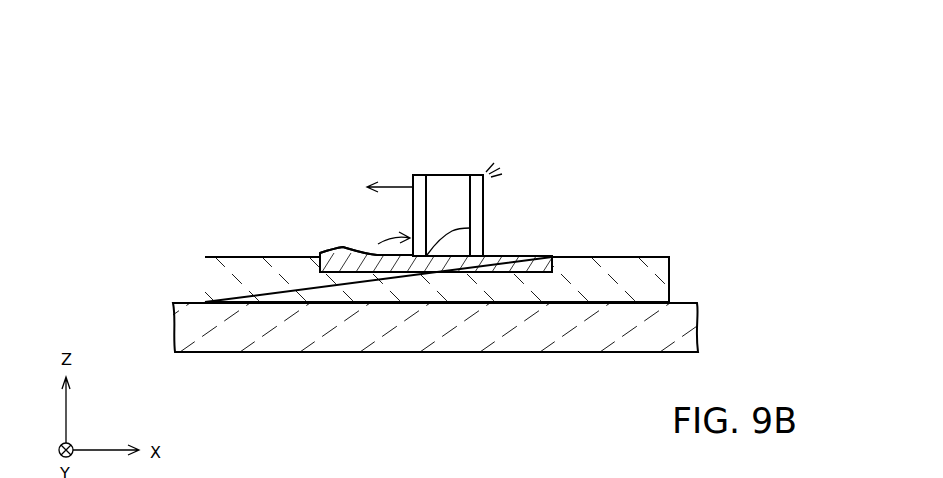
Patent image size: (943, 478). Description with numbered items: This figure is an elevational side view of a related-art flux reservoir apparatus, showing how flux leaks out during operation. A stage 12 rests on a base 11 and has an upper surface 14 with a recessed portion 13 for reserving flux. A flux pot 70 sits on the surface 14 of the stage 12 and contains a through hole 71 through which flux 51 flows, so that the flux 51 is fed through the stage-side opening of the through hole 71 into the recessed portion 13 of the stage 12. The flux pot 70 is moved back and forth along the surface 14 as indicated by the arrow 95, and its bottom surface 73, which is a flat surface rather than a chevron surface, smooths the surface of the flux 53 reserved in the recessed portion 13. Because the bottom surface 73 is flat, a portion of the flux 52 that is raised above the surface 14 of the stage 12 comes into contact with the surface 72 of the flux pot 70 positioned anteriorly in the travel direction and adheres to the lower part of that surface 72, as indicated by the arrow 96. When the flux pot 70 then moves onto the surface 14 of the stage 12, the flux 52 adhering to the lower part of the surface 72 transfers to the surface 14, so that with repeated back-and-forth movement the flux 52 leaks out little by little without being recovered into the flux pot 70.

The base 11 is at (698, 320).
The stage 12 is at (669, 270).
The recessed portion 13 is at (583, 256).
The surface of the stage 14 is at (638, 257).
The flux 51 is at (462, 227).
The flux raised from the stage surface 52 is at (348, 256).
The flux reserved in the recessed portion 53 is at (537, 255).
The flux pot 70 is at (490, 170).
The through hole 71 is at (443, 187).
The surface of the flux pot 72 is at (412, 218).
The bottom surface of the flux pot 73 is at (505, 254).
The arrow indicating back-and-forth movement 95 is at (397, 187).
The arrow indicating flux adhesion 96 is at (392, 238).